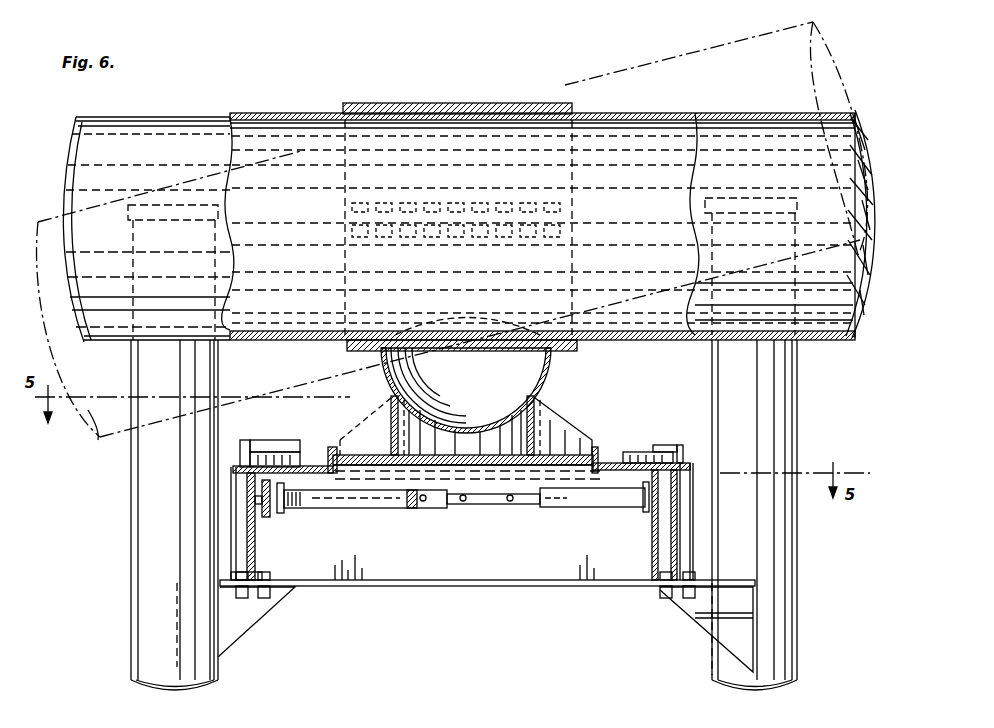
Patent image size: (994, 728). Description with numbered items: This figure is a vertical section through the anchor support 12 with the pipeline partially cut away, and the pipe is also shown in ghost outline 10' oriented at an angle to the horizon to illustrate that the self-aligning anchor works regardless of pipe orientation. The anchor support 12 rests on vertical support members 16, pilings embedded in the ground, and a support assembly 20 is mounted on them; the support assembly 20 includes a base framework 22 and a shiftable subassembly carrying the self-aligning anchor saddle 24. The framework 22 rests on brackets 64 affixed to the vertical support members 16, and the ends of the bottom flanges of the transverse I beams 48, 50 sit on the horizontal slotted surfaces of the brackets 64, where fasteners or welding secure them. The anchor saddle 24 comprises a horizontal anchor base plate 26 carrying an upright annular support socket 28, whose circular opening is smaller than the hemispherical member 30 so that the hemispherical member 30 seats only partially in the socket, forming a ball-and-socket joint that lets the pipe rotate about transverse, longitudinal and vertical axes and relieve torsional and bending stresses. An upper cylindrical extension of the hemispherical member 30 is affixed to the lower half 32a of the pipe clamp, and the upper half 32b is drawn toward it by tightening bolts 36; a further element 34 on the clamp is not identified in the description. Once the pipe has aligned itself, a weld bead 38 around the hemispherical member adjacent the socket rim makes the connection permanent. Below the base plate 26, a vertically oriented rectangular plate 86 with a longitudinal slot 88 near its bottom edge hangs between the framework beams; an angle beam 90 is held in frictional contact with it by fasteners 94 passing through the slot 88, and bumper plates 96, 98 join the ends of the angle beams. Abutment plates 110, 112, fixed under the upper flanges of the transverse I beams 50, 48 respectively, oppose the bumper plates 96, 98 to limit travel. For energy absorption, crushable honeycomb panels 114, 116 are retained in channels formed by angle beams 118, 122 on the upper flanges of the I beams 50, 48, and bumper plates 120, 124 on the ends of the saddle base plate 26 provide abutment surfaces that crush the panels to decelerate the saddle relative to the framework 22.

The pipeline in ghost outline 10' is at (452, 224).
The anchor support 12 is at (800, 425).
The vertical support members 16 is at (148, 557).
The support assembly 20 is at (395, 597).
The base framework 22 is at (265, 550).
The anchor saddle 24 is at (580, 438).
The anchor base plate 26 is at (480, 452).
The support socket 28 is at (540, 415).
The hemispherical member 30 is at (392, 384).
The lower half of pipe clamp 32a is at (350, 348).
The upper half of pipe clamp 32b is at (360, 104).
The perforations 34 is at (572, 222).
The bolts 36 is at (540, 203).
The interconnecting bead 38 is at (385, 402).
The transverse I beam 48 is at (672, 550).
The transverse I beam 50 is at (262, 565).
The brackets 64 is at (262, 615).
The rectangular plate 86 is at (530, 505).
The longitudinally oriented slot 88 is at (488, 506).
The angle beam 90 is at (350, 505).
The fasteners 94 is at (418, 507).
The bumper plate 96 is at (284, 510).
The bumper plate 98 is at (645, 510).
The abutment plate 110 is at (248, 487).
The abutment plate 112 is at (660, 490).
The crushable honeycomb panel 114 is at (278, 442).
The second crushable honeycomb panel 116 is at (664, 447).
The angle beam 118 is at (244, 447).
The bumper plate 120 is at (330, 448).
The angle beam 122 is at (683, 460).
The second bumper plate 124 is at (628, 453).